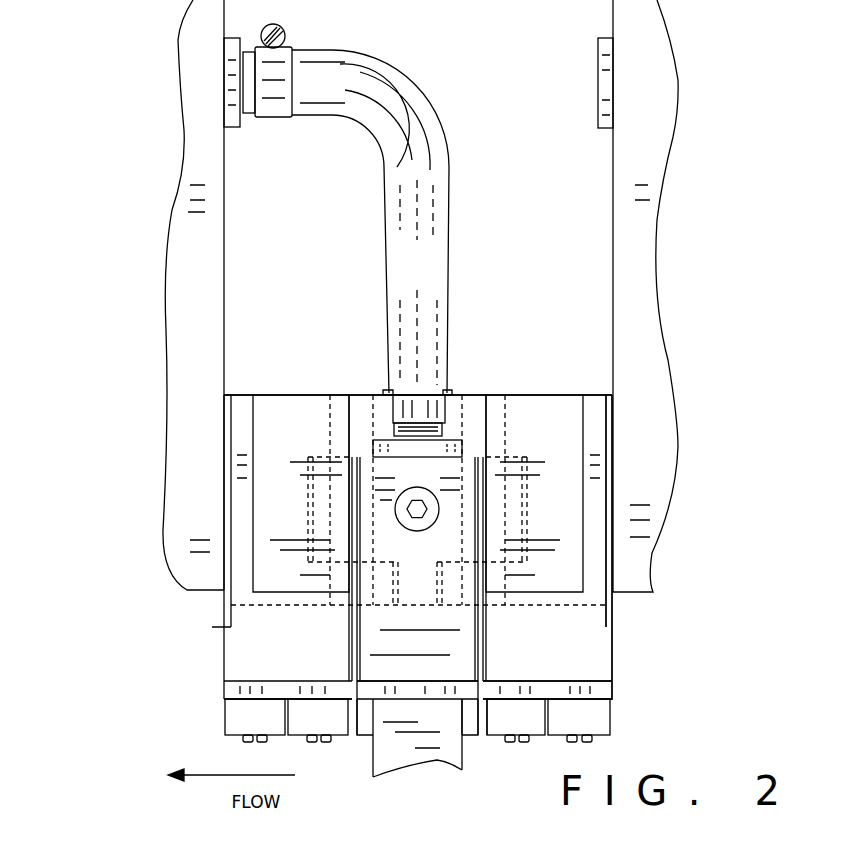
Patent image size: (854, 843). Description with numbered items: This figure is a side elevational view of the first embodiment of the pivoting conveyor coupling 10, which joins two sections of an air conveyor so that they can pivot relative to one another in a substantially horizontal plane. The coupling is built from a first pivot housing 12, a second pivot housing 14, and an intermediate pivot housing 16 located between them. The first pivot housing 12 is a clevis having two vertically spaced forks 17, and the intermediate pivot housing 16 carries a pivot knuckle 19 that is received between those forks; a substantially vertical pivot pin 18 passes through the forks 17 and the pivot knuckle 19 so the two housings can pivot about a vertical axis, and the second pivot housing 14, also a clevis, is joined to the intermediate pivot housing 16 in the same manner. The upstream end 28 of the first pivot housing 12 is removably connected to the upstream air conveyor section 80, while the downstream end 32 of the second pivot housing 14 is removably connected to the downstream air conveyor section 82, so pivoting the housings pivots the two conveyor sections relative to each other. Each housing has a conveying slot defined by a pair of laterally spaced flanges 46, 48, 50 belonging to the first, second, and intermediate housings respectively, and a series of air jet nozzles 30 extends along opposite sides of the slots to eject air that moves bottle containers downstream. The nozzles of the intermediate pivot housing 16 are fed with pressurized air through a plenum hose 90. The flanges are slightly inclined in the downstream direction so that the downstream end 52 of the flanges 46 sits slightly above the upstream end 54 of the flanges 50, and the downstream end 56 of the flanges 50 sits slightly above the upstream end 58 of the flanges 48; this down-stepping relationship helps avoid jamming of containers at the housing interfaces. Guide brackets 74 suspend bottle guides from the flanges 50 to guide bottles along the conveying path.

The pivoting conveyor coupling 10 is at (140, 568).
The first pivot housing 12 is at (593, 525).
The second pivot housing 14 is at (240, 481).
The intermediate pivot housing 16 is at (435, 473).
The forks 17 is at (383, 562).
The pivot pins 18 is at (330, 417).
The pivot knuckle 19 is at (313, 490).
The upstream end of the first pivot housing 28 is at (613, 470).
The air jet nozzles 30 is at (240, 715).
The downstream end of the second pivot housing 32 is at (224, 413).
The flanges of the first pivot housing 46 is at (548, 690).
The flanges of the second pivot housing 48 is at (277, 690).
The flanges of the intermediate pivot housing 50 is at (412, 692).
The downstream end of the flanges of the first pivot housing 52 is at (498, 692).
The upstream end of the flanges of the intermediate pivot housing 54 is at (467, 690).
The downstream end of the flanges of the intermediate pivot housing 56 is at (362, 690).
The upstream end of the flanges of the second pivot housing 58 is at (343, 690).
The guide brackets 74 is at (418, 740).
The upstream air conveyor section 80 is at (648, 42).
The downstream air conveyor section 82 is at (193, 67).
The plenum hose 90 is at (452, 175).